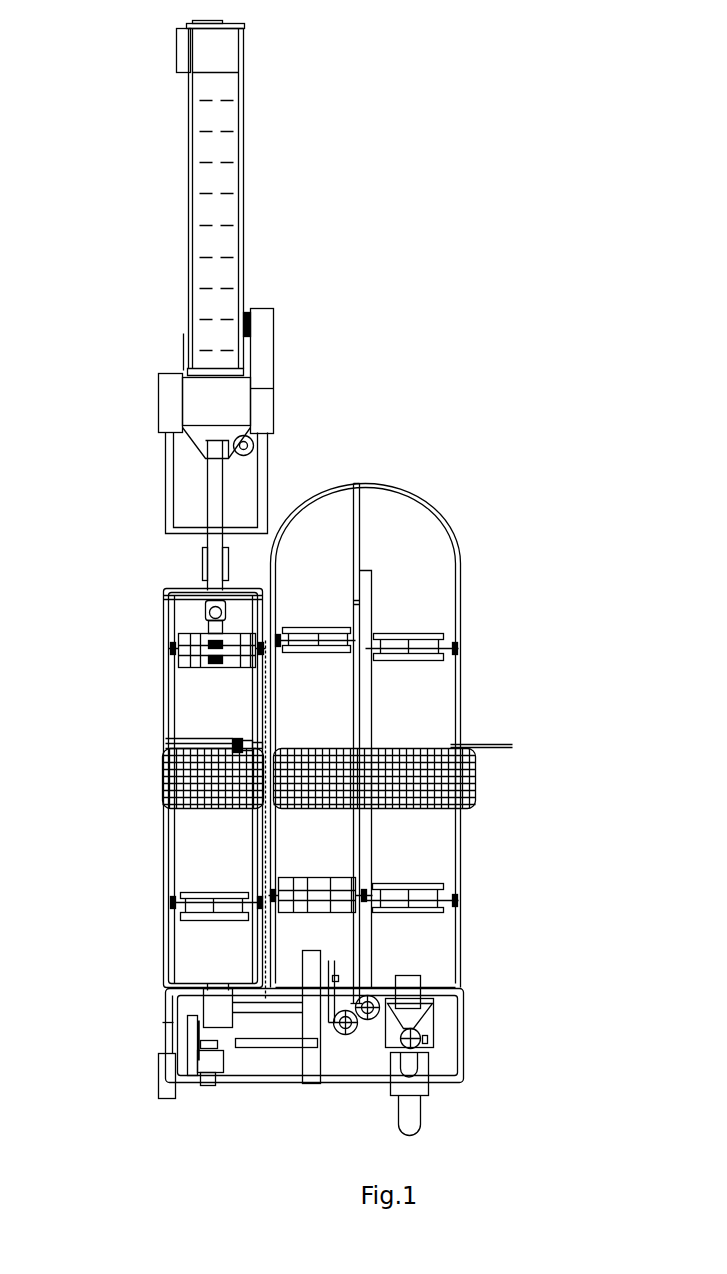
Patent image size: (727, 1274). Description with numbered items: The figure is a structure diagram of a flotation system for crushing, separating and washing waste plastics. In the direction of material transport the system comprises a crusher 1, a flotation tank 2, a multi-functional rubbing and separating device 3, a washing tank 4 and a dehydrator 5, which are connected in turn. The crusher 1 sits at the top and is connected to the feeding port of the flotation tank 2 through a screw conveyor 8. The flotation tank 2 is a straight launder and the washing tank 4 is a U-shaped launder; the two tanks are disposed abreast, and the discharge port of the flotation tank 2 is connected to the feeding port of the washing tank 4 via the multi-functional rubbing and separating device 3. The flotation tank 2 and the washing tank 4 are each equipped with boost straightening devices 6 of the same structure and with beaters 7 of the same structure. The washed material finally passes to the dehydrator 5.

The crusher 1 is at (198, 402).
The flotation tank 2 is at (190, 712).
The multi-functional rubbing and separating device 3 is at (242, 1020).
The washing tank 4 is at (418, 593).
The dehydrator 5 is at (417, 1022).
The boost straightening device 6 is at (200, 648).
The beater 7 is at (427, 637).
The screw conveyor 8 is at (215, 568).